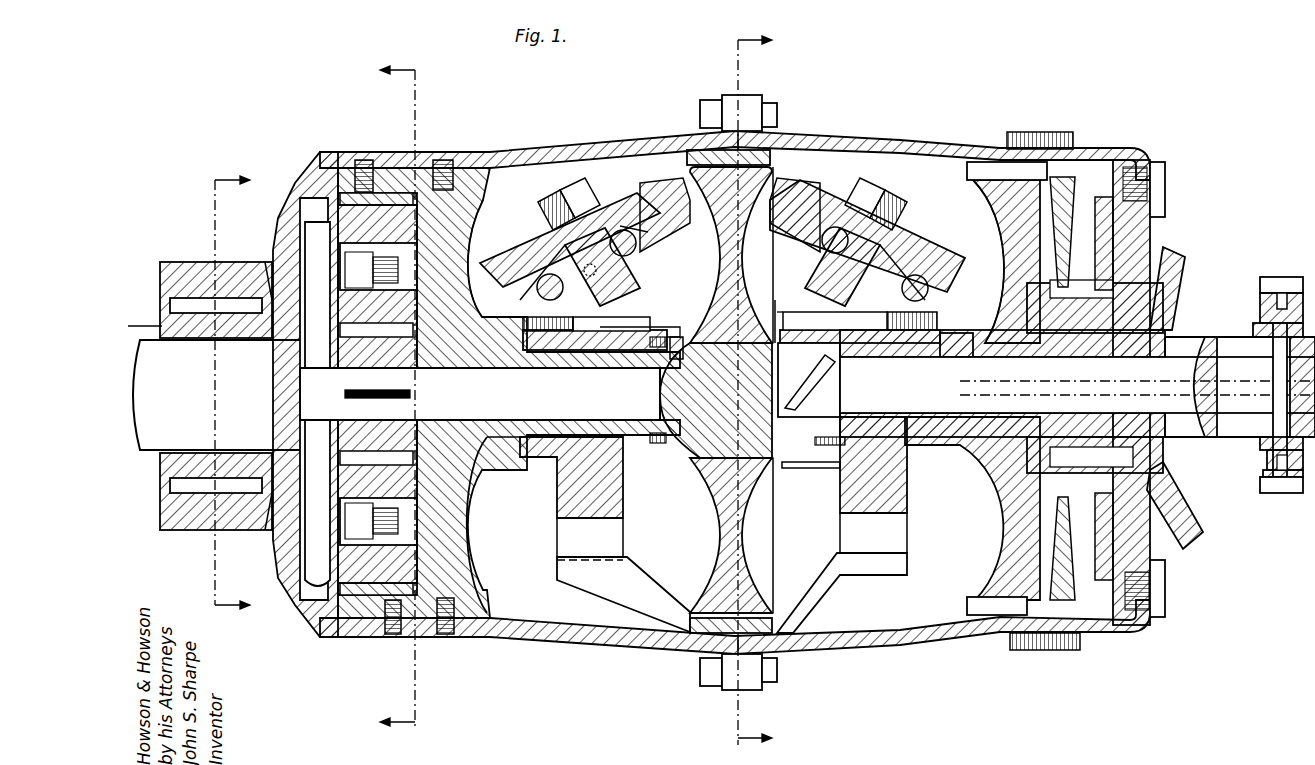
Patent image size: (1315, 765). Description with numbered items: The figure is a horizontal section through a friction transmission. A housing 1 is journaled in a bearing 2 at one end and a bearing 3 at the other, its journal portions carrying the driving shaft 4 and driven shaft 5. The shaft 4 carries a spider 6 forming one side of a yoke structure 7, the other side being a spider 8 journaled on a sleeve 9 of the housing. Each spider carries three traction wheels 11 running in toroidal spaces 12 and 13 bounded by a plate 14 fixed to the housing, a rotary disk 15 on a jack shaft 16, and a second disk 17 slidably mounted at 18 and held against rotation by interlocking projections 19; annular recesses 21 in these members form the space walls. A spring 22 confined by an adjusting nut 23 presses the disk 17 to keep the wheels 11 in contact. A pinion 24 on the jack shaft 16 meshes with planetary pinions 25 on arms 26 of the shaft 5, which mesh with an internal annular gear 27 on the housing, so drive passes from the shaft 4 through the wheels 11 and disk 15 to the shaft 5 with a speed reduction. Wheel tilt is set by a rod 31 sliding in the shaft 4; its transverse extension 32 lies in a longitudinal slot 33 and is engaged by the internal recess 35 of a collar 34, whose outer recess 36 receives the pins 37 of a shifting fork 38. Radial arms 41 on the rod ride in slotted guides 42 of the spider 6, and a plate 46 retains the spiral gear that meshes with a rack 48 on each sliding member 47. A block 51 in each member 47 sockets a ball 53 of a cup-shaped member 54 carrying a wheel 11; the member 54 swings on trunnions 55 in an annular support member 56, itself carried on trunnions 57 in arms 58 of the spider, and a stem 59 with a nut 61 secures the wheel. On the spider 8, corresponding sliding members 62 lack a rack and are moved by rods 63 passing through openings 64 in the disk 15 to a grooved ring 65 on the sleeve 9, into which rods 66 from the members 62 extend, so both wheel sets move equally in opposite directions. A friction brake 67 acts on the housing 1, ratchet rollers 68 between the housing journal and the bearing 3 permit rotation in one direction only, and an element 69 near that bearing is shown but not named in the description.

The housing 1 is at (144, 327).
The bearing 2 is at (1198, 515).
The bearing 3 is at (185, 270).
The driving shaft 4 is at (960, 430).
The driven shaft 5 is at (165, 492).
The spider 6 is at (908, 505).
The yoke structure 7 is at (850, 138).
The spider 8 is at (615, 490).
The sleeve 9 is at (492, 448).
The traction wheels 11 is at (625, 200).
The toroidal space 12 is at (487, 258).
The toroidal space 13 is at (977, 261).
The plate 14 is at (468, 538).
The rotary disk 15 is at (735, 520).
The jack shaft 16 is at (396, 395).
The second disk 17 is at (1000, 530).
The slidable mounting 18 is at (985, 440).
The interlocking projections 19 is at (967, 174).
The annular recesses 21 is at (470, 490).
The spring 22 is at (1072, 215).
The adjusting nut 23 is at (1105, 240).
The pinion 24 is at (360, 350).
The planetary pinions 25 is at (440, 210).
The arm 26 is at (318, 230).
The internal annular gear 27 is at (380, 176).
The rod 31 is at (965, 378).
The transverse extension 32 is at (1280, 348).
The longitudinal slot 33 is at (1225, 342).
The collar 34 is at (1265, 452).
The internal circumferential recess 35 is at (1257, 440).
The circumferential recess 36 is at (1270, 474).
The pins 37 is at (1260, 292).
The shifting fork 38 is at (1272, 277).
The radially projecting arms 41 is at (815, 442).
The axially slotted guides 42 is at (785, 470).
The plate 46 is at (876, 336).
The sliding members 47 is at (788, 295).
The rack 48 is at (767, 315).
The block 51 is at (730, 308).
The ball 53 is at (820, 292).
The wheel-carrying member 54 is at (933, 286).
The trunnions 55 is at (932, 228).
The annular support member 56 is at (828, 232).
The trunnions 57 is at (640, 245).
The arms 58 is at (634, 220).
The stem 59 is at (598, 202).
The nut 61 is at (918, 202).
The sliding members 62 is at (640, 330).
The rods 63 is at (809, 380).
The transverse openings 64 is at (716, 387).
The circumferentially grooved ring 65 is at (660, 444).
The rods 66 is at (672, 336).
The friction brake 67 is at (1062, 132).
The rollers 68 is at (228, 305).
The bearing cap 69 is at (268, 265).